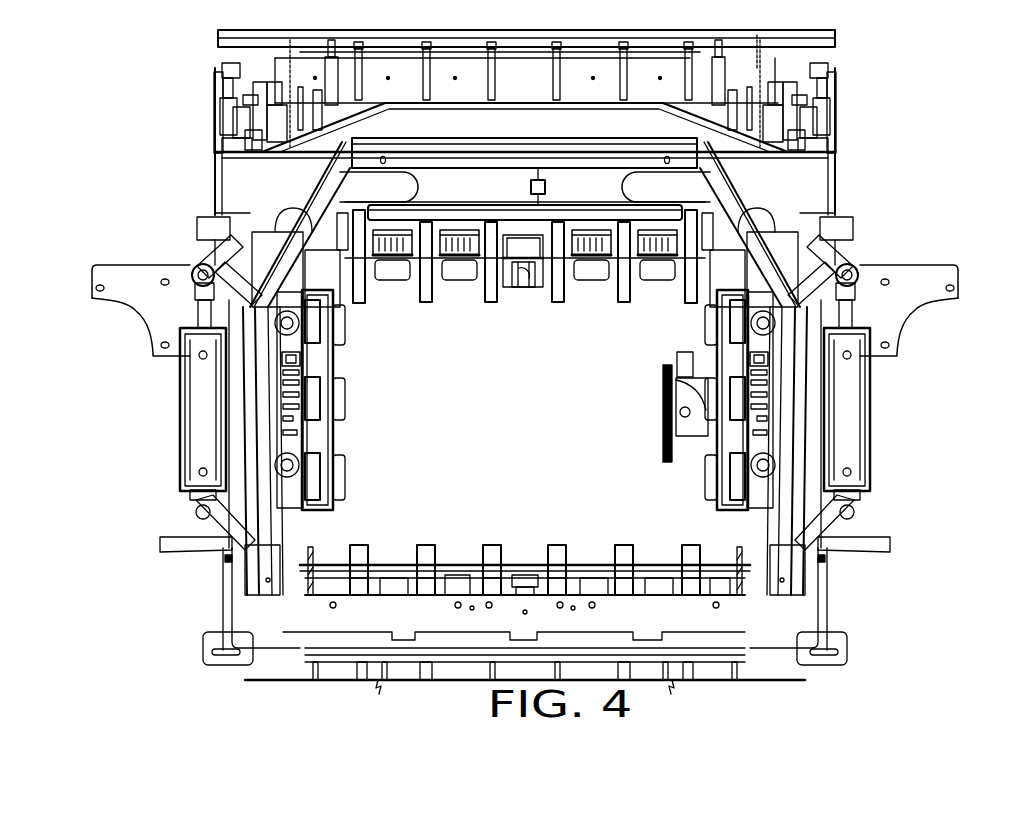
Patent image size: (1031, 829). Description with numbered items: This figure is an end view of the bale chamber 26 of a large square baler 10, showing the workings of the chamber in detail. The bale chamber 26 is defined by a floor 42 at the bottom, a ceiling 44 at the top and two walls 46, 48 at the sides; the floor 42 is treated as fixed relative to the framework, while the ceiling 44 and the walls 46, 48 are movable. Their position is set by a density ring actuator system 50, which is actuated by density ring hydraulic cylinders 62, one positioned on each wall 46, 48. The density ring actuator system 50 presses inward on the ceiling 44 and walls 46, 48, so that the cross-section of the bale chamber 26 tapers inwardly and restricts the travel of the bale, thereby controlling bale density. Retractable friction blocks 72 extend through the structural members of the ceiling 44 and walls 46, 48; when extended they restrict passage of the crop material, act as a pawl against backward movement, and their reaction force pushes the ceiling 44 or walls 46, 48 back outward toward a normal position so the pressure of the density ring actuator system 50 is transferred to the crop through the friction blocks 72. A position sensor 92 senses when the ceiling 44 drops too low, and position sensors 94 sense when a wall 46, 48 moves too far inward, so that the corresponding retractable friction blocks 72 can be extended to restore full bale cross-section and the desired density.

The large square baler 10 is at (966, 96).
The density ring actuator system 50 is at (693, 113).
The position sensor 92 is at (548, 185).
The bale chamber 26 is at (503, 417).
The ceiling 44 is at (691, 272).
The retractable friction block 72 is at (460, 272).
The position sensor 94 is at (290, 357).
The density ring hydraulic cylinder 62 is at (180, 412).
The floor 42 is at (523, 556).
The wall 48 is at (313, 530).
The wall 46 is at (742, 527).